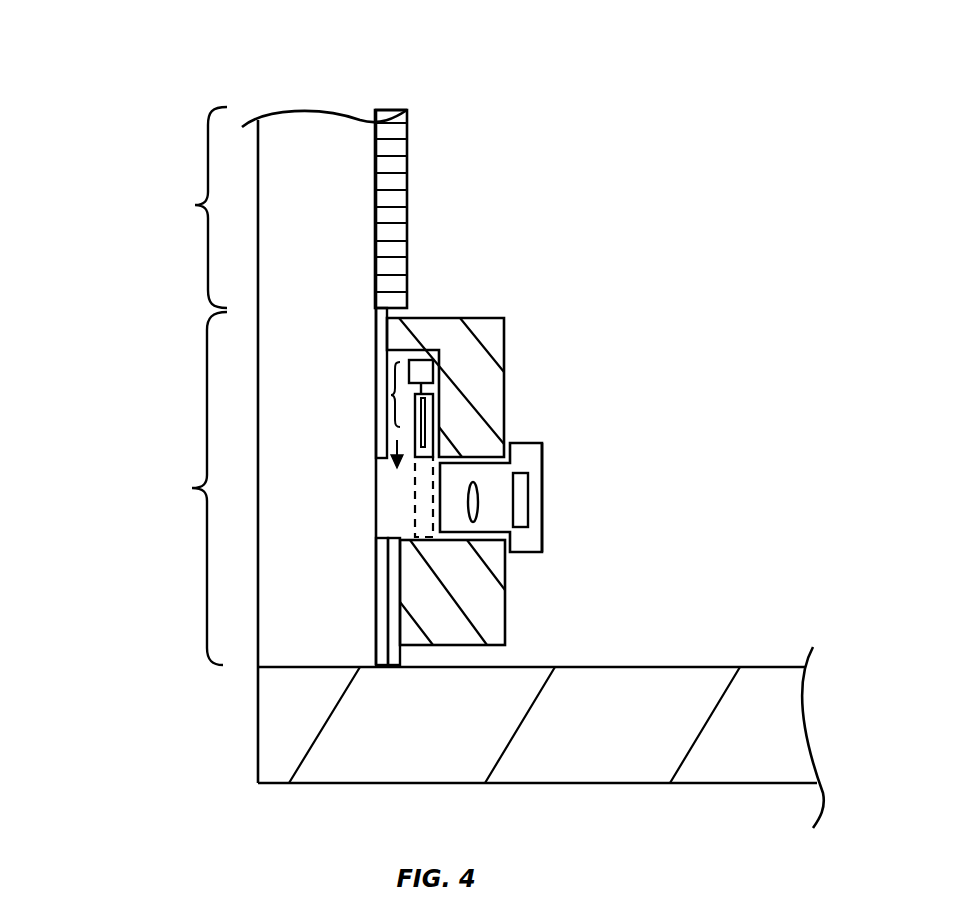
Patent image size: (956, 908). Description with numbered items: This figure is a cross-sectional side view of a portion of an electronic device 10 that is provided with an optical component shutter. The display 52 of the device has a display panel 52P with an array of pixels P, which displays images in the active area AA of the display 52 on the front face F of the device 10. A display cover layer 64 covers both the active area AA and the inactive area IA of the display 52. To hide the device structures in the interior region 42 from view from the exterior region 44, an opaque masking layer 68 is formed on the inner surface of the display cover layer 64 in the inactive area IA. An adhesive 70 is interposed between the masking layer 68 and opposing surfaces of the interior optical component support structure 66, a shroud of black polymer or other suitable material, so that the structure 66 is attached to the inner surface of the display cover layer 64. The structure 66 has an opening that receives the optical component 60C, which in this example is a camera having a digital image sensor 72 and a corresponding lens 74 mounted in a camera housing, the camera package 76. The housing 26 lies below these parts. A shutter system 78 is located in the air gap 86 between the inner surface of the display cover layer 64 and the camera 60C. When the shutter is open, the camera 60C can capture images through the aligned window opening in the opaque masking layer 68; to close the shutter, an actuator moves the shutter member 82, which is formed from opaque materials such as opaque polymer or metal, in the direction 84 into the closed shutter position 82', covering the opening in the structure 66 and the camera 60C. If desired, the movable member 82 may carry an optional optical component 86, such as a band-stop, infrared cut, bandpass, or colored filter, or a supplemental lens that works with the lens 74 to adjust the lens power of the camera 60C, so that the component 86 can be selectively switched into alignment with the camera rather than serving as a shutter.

The electronic device 10 is at (623, 70).
The display 52 is at (95, 273).
The display panel 52P is at (382, 105).
The pixels P is at (402, 185).
The active area AA is at (194, 207).
The inactive area IA is at (196, 488).
The front face F is at (112, 548).
The exterior region 44 is at (107, 640).
The interior region 42 is at (683, 567).
The display cover layer 64 is at (277, 652).
The housing 26 is at (630, 770).
The interior optical component support structure 66 is at (498, 330).
The opaque masking layer 68 is at (380, 358).
The adhesive 70 is at (400, 318).
The shutter system 78 is at (392, 393).
The shutter member 82 is at (496, 373).
The closed shutter position 82' is at (372, 497).
The direction 84 is at (392, 448).
The optional optical component 86 is at (433, 410).
The optical component 60C is at (538, 433).
The digital image sensor 72 is at (530, 500).
The lens 74 is at (478, 518).
The camera package 76 is at (543, 535).